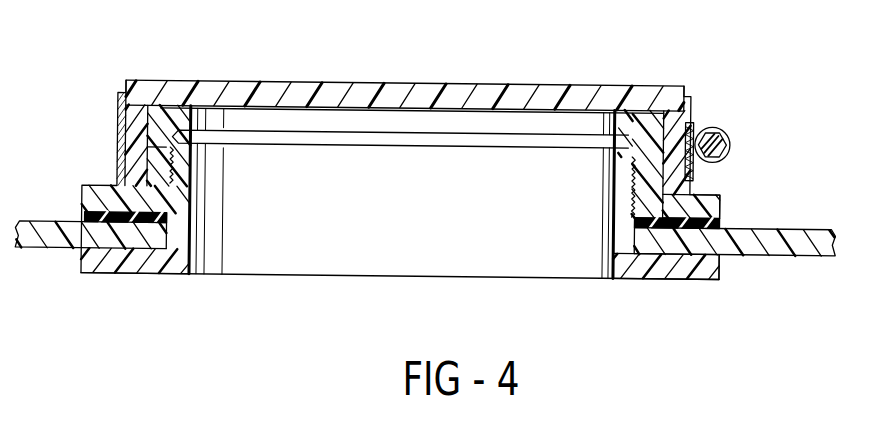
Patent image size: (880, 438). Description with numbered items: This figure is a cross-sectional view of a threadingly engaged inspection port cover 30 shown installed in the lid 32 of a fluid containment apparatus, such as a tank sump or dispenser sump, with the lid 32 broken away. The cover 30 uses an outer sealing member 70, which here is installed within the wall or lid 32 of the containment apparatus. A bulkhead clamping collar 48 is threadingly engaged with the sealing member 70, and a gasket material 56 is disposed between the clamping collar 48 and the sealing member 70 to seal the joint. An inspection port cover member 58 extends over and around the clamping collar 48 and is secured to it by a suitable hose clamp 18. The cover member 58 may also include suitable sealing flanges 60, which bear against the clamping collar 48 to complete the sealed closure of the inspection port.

The inspection port cover 30 is at (68, 119).
The inspection port cover member 58 is at (505, 82).
The sealing flanges 60 is at (163, 153).
The hose clamp 18 is at (713, 120).
The bulkhead clamping collar 48 is at (723, 197).
The gasket material 56 is at (723, 218).
The outer sealing member 70 is at (682, 279).
The lid 32 is at (783, 253).